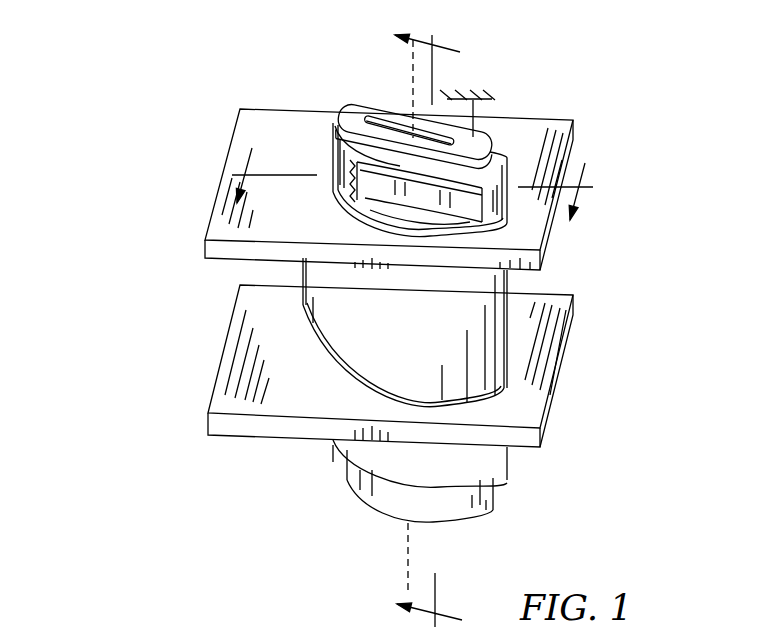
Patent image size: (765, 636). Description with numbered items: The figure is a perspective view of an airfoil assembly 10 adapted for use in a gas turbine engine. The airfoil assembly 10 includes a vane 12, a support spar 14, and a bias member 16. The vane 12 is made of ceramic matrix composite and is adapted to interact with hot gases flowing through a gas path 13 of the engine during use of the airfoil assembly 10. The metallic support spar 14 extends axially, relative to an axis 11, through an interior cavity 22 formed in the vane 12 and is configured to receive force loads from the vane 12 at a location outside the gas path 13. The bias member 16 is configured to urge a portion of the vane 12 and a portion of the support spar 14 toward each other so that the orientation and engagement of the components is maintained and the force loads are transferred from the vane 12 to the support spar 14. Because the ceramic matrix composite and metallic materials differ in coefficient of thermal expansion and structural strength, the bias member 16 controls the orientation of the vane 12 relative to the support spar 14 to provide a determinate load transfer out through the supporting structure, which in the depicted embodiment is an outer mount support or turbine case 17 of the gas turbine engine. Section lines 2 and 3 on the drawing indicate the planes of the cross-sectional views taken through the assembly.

The airfoil assembly 10 is at (138, 127).
The axis 11 is at (410, 545).
The vane 12 is at (572, 250).
The gas path 13 is at (292, 332).
The support spar 14 is at (492, 128).
The bias member 16 is at (337, 191).
The turbine case 17 is at (496, 101).
The interior cavity 22 is at (337, 115).
The section line 2- 2 is at (438, 334).
The section line 3- 3 is at (412, 170).